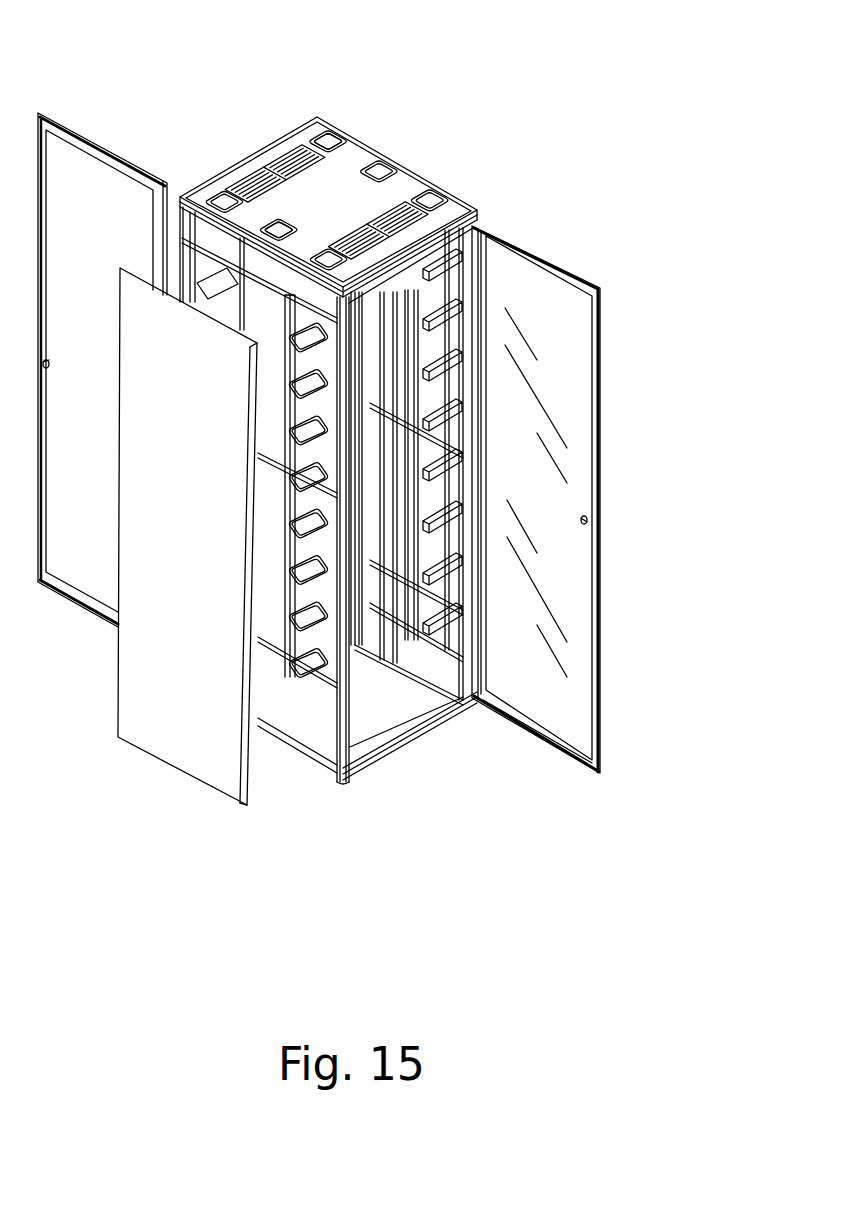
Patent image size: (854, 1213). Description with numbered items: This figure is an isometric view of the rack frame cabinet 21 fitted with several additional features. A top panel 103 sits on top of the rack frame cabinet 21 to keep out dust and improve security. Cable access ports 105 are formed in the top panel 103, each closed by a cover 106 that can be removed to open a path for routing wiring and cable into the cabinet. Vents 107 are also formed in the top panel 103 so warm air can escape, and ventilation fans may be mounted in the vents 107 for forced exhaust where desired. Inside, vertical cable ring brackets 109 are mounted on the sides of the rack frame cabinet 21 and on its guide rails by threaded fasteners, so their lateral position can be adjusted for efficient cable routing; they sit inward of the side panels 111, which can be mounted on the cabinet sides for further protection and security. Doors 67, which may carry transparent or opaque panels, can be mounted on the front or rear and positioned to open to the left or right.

The rack frame cabinet 21 is at (422, 130).
The door 67 is at (72, 122).
The top panel 103 is at (347, 163).
The cable access port 105 is at (303, 130).
The cover 106 is at (277, 219).
The vent 107 is at (243, 178).
The vertical cable ring bracket 109 is at (425, 337).
The side panel 111 is at (153, 735).